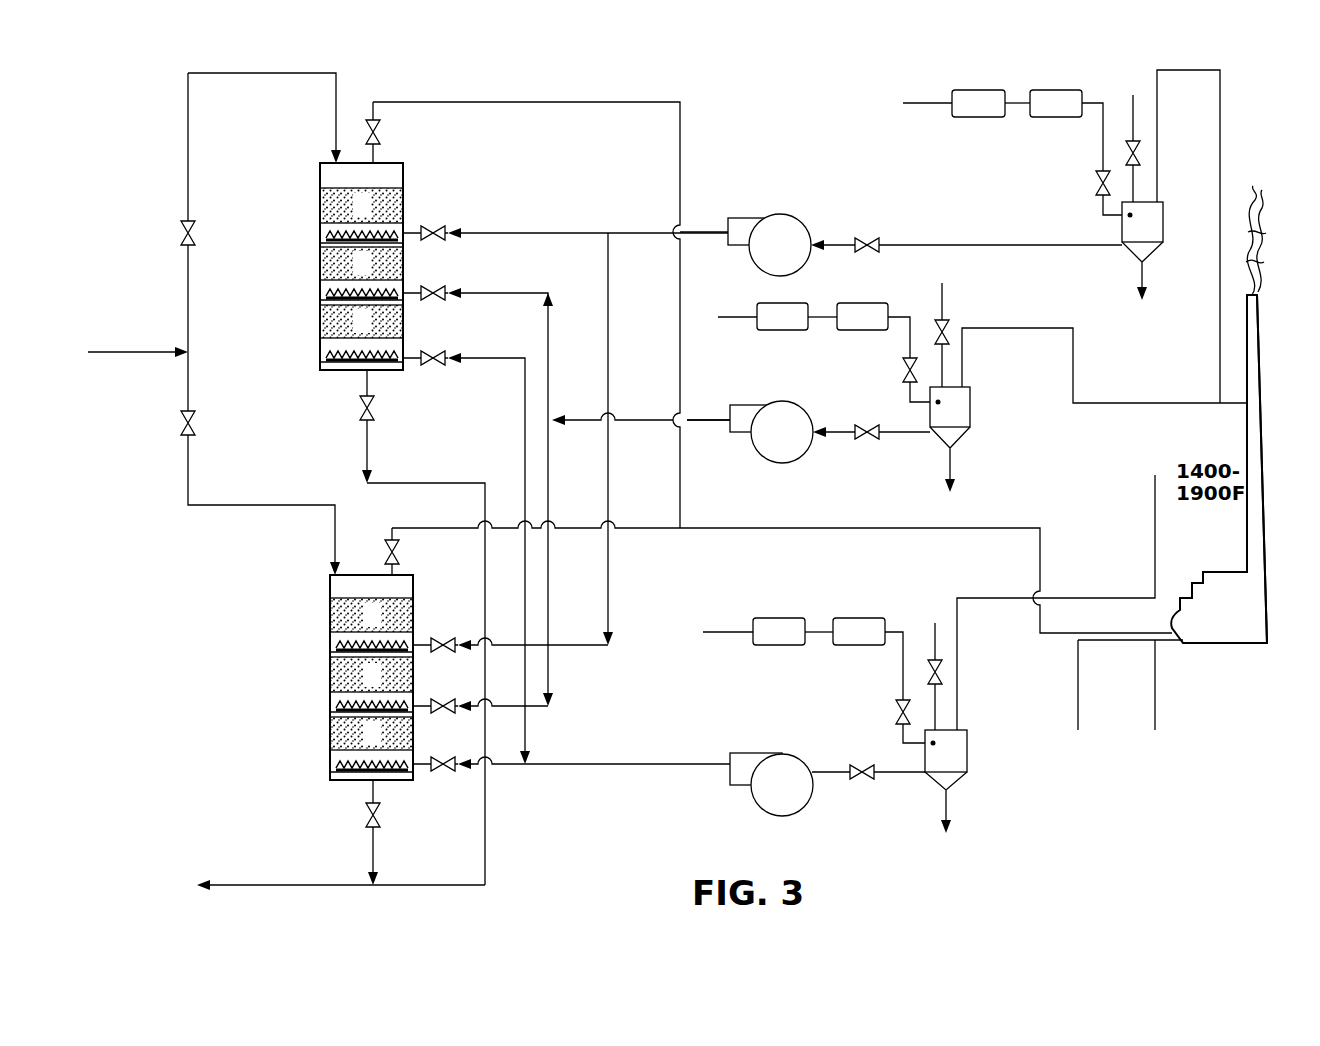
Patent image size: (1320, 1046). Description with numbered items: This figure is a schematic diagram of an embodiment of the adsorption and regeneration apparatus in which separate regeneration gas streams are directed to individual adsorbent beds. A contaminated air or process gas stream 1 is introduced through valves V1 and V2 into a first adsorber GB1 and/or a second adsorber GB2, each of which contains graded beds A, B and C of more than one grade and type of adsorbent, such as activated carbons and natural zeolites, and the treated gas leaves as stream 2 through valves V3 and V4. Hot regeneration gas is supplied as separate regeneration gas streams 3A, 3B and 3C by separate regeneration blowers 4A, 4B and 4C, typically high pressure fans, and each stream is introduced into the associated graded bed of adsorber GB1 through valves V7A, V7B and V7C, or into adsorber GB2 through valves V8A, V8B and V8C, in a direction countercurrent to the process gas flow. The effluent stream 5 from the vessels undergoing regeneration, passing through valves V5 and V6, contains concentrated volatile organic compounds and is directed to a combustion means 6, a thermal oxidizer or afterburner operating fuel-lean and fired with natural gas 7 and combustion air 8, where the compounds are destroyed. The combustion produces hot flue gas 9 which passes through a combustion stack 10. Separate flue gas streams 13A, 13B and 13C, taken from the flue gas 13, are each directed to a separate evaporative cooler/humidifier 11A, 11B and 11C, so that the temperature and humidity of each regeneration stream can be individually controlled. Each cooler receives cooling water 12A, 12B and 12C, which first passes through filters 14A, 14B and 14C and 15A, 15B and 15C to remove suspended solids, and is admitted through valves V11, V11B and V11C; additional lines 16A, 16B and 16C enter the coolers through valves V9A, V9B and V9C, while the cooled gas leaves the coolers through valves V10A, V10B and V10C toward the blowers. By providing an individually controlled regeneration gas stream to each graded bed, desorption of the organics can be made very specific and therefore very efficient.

The process gas stream 1 is at (104, 345).
The gas outlet 2 is at (332, 873).
The regeneration gas stream 3A is at (594, 423).
The regeneration gas stream 3B is at (641, 408).
The regeneration gas stream 3C is at (600, 751).
The regeneration blower 4A is at (752, 245).
The regeneration blower 4B is at (756, 432).
The regeneration blower 4C is at (771, 784).
The effluent stream 5 is at (772, 353).
The combustion means 6 is at (1229, 633).
The natural gas 7 is at (1126, 701).
The combustion air 8 is at (1157, 701).
The hot flue gas 9 is at (1270, 469).
The combustion stack 10 is at (1277, 240).
The evaporative cooler/humidifier 11A is at (1167, 251).
The evaporative cooler/humidifier 11B is at (980, 439).
The evaporative cooler/humidifier 11C is at (975, 781).
The cooling water 12A is at (909, 89).
The cooling water 12B is at (734, 302).
The cooling water 12C is at (726, 617).
The flue gas 13 is at (1236, 400).
The flue gas stream 13A is at (1188, 223).
The flue gas stream 13B is at (1104, 365).
The flue gas stream 13C is at (1056, 602).
The filter 14A is at (991, 103).
The filter 14B is at (797, 316).
The filter 14C is at (793, 631).
The filter 15A is at (1056, 103).
The filter 15B is at (862, 316).
The filter 15C is at (859, 631).
The steam line A 16A is at (1132, 135).
The steam line B 16B is at (943, 322).
The steam line C 16C is at (937, 662).
The first adsorber GB1 is at (334, 266).
The second adsorber GB2 is at (345, 677).
The valve V1 is at (243, 242).
The valve V2 is at (244, 493).
The valve V3 is at (401, 627).
The valve V4 is at (355, 832).
The valve V5 is at (389, 132).
The valve V6 is at (408, 551).
The valve V7A is at (432, 218).
The valve V7B is at (478, 481).
The valve V7C is at (466, 543).
The valve V8A is at (510, 629).
The valve V8B is at (480, 691).
The valve V8C is at (442, 750).
The valve V9A is at (1136, 150).
The valve V9B is at (963, 318).
The valve V9C is at (938, 668).
The valve V10A is at (973, 228).
The valve V10B is at (878, 417).
The valve V10C is at (868, 756).
The valve V11 is at (1090, 159).
The valve V11B is at (891, 359).
The valve V11C is at (885, 687).